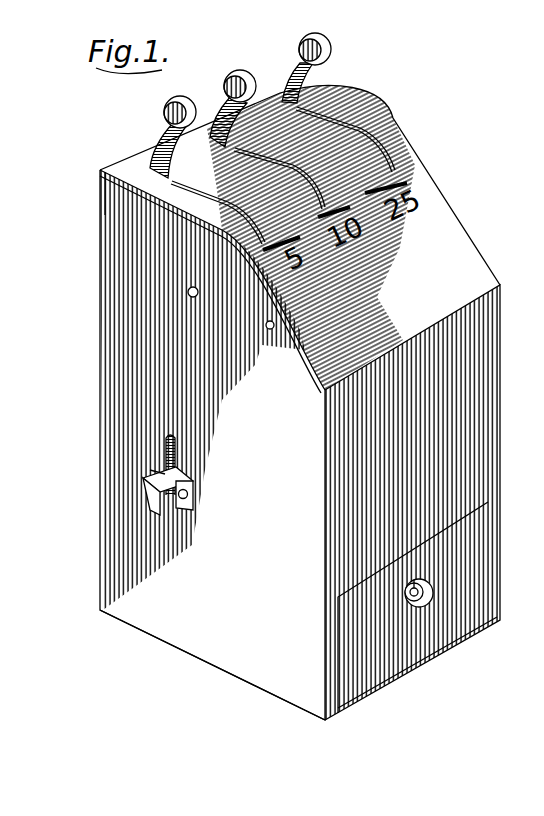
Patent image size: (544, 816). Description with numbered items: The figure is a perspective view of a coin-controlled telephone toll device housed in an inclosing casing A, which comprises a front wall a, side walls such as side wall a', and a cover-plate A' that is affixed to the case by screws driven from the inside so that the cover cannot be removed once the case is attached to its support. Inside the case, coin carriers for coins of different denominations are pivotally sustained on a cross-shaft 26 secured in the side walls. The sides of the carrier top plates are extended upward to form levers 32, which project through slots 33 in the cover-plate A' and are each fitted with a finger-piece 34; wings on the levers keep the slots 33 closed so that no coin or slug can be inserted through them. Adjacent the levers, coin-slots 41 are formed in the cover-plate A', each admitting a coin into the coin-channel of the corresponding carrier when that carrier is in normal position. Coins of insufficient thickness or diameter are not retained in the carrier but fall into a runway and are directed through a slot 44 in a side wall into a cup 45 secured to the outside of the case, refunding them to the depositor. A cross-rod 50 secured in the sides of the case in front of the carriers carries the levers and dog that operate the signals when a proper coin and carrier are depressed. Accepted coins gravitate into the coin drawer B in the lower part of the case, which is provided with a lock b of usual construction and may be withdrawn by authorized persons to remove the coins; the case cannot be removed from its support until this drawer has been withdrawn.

The cross-shaft 26 is at (187, 292).
The lever 32 is at (166, 131).
The slot 33 is at (177, 183).
The finger-piece 34 is at (248, 74).
The coin-slot 41 is at (410, 184).
The slot 44 is at (178, 461).
The cup 45 is at (193, 486).
The cross-rod 50 is at (272, 330).
The inclosing casing A is at (197, 445).
The cover-plate A' is at (300, 237).
The front wall a is at (426, 502).
The side wall a' is at (212, 599).
The coin receptacle or drawer B is at (480, 580).
The lock b is at (428, 608).